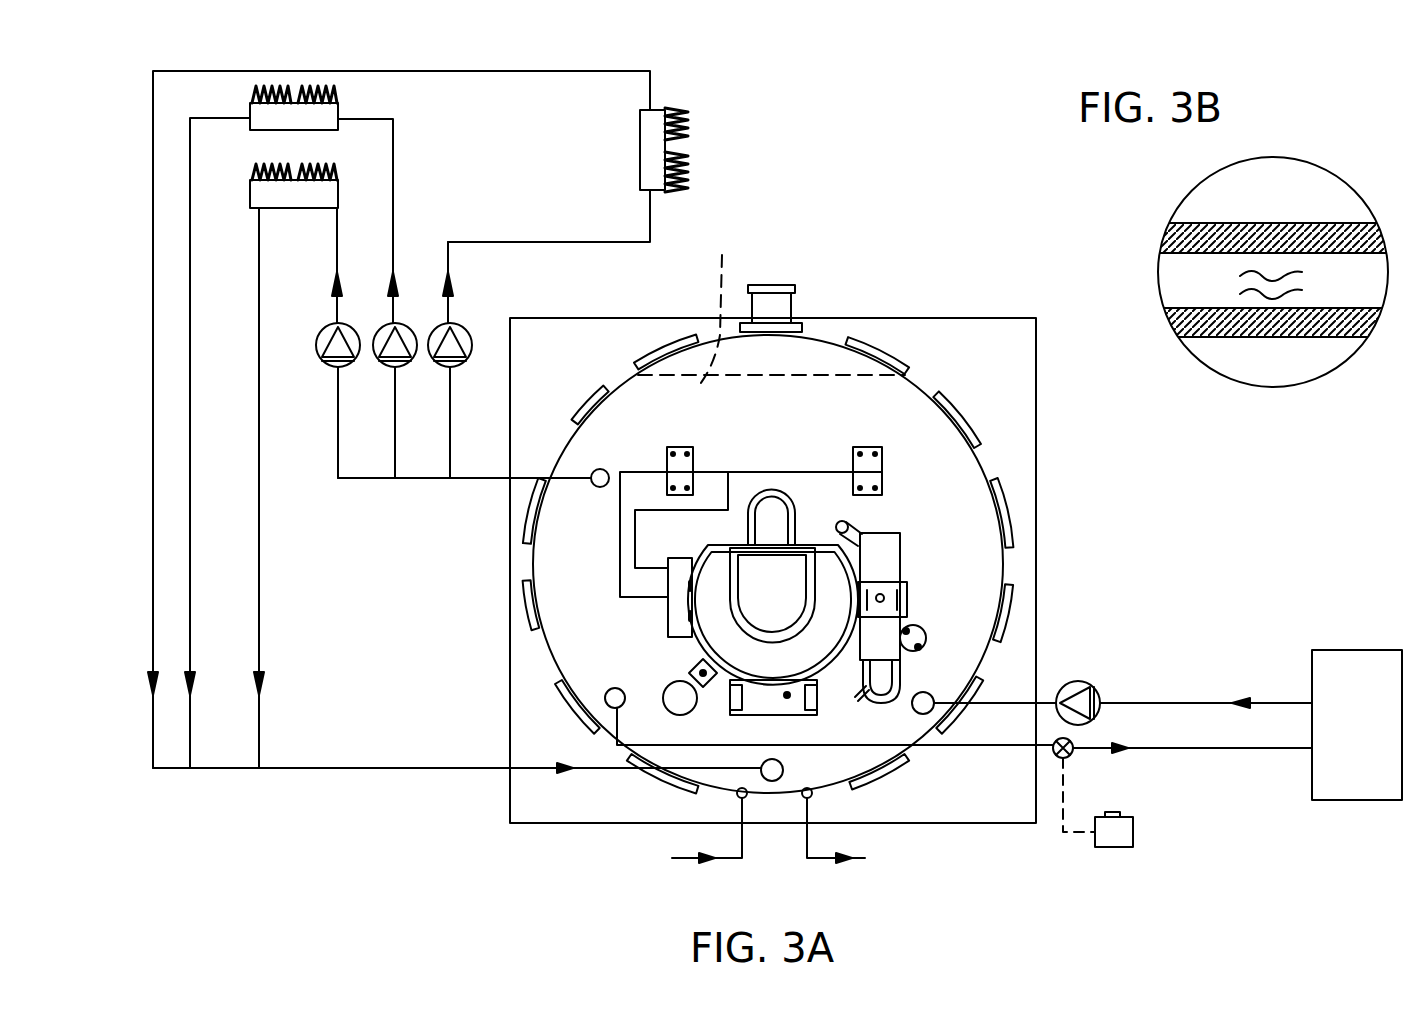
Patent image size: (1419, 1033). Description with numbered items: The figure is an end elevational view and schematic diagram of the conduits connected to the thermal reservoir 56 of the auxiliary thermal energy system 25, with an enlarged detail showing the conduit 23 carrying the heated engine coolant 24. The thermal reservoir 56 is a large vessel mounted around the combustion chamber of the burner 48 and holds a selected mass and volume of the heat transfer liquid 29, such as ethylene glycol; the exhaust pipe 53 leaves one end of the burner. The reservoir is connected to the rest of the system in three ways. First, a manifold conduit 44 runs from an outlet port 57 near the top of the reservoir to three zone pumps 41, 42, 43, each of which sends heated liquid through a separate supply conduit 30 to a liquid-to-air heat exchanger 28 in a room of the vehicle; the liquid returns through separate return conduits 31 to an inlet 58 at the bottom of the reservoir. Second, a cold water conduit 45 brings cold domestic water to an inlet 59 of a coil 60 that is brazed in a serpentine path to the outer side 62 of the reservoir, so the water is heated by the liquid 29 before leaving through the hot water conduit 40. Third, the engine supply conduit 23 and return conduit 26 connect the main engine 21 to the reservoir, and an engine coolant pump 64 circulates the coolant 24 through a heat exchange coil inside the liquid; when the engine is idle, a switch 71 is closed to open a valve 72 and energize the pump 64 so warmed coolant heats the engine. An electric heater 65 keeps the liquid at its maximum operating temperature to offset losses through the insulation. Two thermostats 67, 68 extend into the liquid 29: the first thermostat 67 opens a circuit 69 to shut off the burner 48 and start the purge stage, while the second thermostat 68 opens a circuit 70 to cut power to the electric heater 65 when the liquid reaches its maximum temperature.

In FIG. 3A, the main engine 21 is at (1357, 650).
In FIG. 3A, the conduit 23 is at (1180, 703).
In FIG. 3B, the conduit 23 is at (1290, 337).
In FIG. 3B, the engine coolant 24 is at (1277, 277).
In FIG. 3A, the auxiliary thermal energy system 25 is at (930, 782).
In FIG. 3A, the return conduit 26 is at (605, 700).
In FIG. 3A, the liquid-to-air heat exchanger 28 is at (338, 198).
In FIG. 3A, the heat transfer liquid 29 is at (721, 304).
In FIG. 3A, the supply conduit 30 is at (563, 242).
In FIG. 3A, the return conduit 31 is at (259, 663).
In FIG. 3A, the hot water conduit 40 is at (865, 858).
In FIG. 3A, the zone pump 41 is at (322, 330).
In FIG. 3A, the zone pump 42 is at (378, 358).
In FIG. 3A, the zone pump 43 is at (468, 328).
In FIG. 3A, the manifold conduit 44 is at (475, 478).
In FIG. 3A, the cold water conduit 45 is at (672, 858).
In FIG. 3A, the burner 48 is at (912, 548).
In FIG. 3A, the exhaust pipe 53 is at (667, 687).
In FIG. 3A, the thermal reservoir 56 is at (828, 330).
In FIG. 3A, the outlet port 57 is at (592, 474).
In FIG. 3A, the inlet 58 is at (779, 781).
In FIG. 3A, the inlet 59 is at (737, 795).
In FIG. 3A, the coil 60 is at (880, 350).
In FIG. 3A, the outer side 62 is at (917, 378).
In FIG. 3A, the engine coolant pump 64 is at (1083, 685).
In FIG. 3A, the electric heater 65 is at (927, 634).
In FIG. 3A, the first thermostat 67 is at (882, 480).
In FIG. 3A, the second thermostat 68 is at (693, 447).
In FIG. 3A, the circuit 69 is at (827, 472).
In FIG. 3A, the circuit 70 is at (620, 593).
In FIG. 3A, the switch 71 is at (1137, 833).
In FIG. 3A, the valve 72 is at (1075, 742).